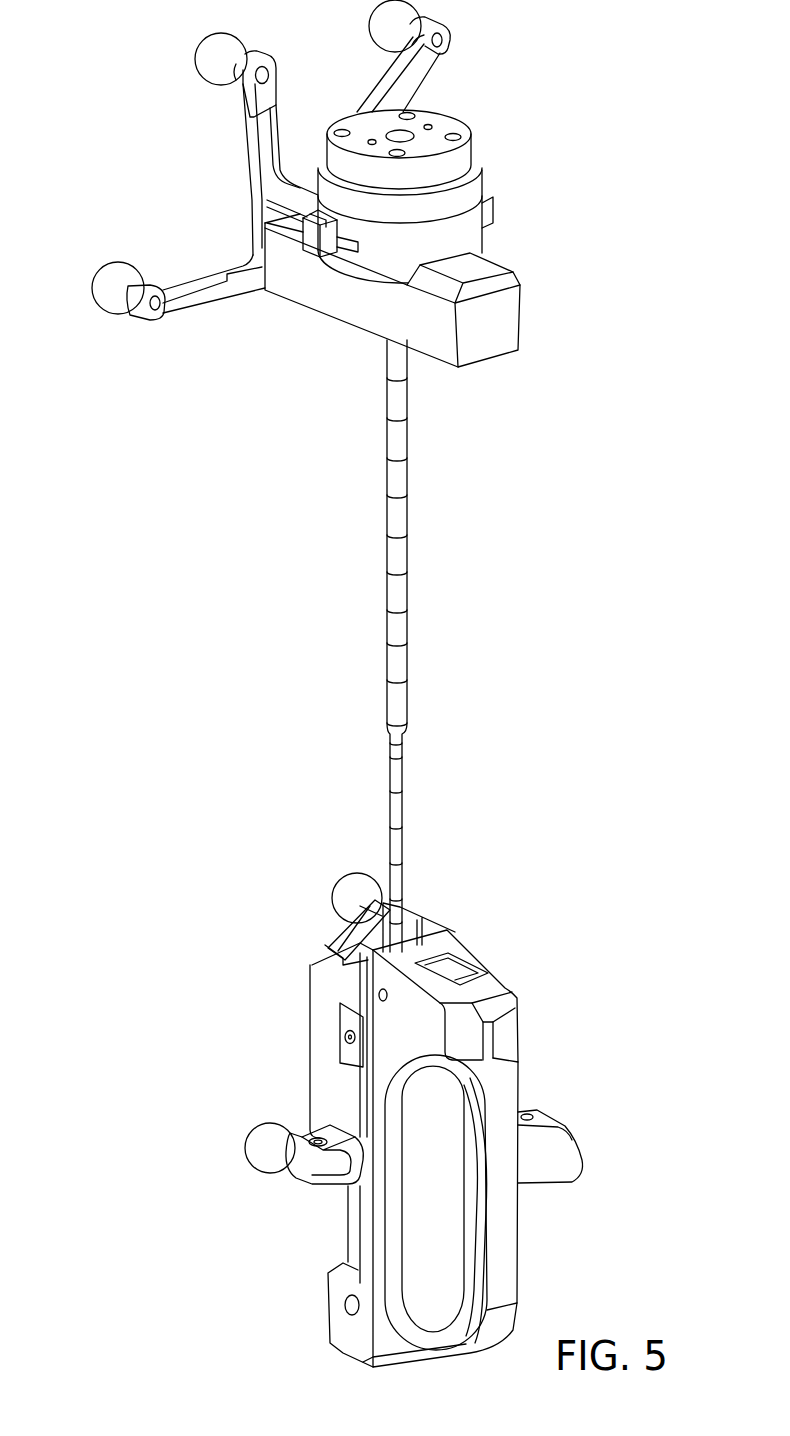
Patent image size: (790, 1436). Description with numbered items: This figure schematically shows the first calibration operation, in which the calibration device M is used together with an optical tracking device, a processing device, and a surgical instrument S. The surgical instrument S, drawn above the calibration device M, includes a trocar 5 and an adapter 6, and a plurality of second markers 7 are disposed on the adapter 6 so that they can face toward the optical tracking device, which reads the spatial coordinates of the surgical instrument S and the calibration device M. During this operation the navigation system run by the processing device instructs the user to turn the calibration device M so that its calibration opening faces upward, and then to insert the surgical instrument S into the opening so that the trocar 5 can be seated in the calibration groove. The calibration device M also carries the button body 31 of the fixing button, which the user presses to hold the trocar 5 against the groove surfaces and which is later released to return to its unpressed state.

The surgical instrument S is at (208, 459).
The calibration device M is at (593, 1035).
The trocar 5 is at (404, 594).
The adapter 6 is at (517, 324).
The second markers 7 is at (205, 60).
The button body 31 is at (470, 984).